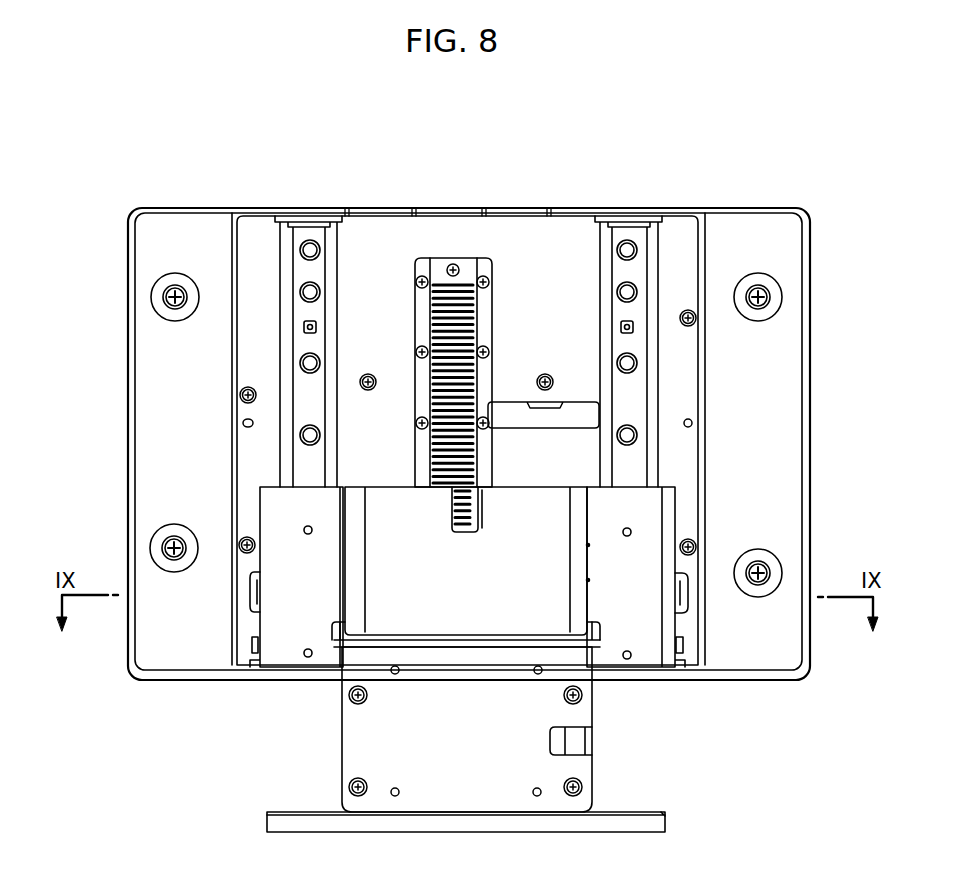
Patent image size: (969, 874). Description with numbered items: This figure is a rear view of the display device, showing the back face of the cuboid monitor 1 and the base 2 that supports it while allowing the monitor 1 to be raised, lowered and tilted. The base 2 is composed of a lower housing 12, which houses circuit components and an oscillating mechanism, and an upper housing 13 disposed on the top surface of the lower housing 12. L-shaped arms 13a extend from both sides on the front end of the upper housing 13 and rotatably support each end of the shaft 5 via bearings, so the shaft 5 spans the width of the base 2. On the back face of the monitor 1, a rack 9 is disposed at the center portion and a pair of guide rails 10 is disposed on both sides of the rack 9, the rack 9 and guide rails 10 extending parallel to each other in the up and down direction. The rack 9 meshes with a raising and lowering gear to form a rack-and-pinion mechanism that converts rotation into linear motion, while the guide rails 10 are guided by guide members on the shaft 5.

The monitor 1 is at (785, 210).
The base 2 is at (253, 700).
The shaft 5 is at (248, 602).
The rack 9 is at (455, 290).
The guide rails 10 is at (333, 275).
The lower housing 12 is at (382, 748).
The upper housing 13 is at (372, 605).
The arms 13a is at (280, 632).